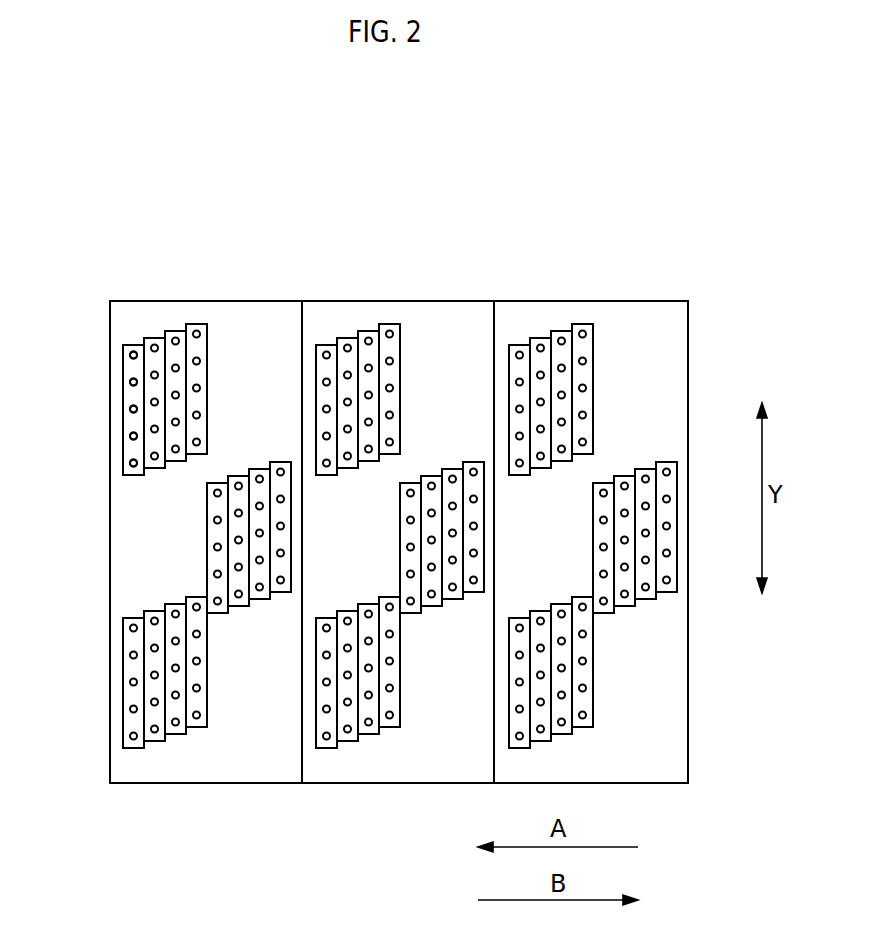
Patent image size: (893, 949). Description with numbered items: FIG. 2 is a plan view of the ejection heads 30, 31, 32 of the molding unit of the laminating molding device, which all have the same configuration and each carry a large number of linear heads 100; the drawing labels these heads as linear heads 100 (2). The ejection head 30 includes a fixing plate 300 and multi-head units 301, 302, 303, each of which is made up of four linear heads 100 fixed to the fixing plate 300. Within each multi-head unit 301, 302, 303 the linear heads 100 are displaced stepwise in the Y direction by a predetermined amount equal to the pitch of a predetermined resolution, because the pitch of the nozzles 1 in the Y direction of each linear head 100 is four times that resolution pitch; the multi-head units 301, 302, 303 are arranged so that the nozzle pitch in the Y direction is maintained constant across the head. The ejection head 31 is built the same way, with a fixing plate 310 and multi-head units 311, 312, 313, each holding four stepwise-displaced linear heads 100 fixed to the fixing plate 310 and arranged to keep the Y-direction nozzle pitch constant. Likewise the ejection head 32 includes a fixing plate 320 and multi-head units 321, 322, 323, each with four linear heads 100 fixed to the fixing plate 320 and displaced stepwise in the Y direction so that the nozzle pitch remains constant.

The nozzle 1 is at (86, 409).
The light-emitting element array chip 2 is at (150, 345).
The linear head 100 is at (191, 324).
The ejection head 30 is at (410, 301).
The ejection head 31 is at (238, 300).
The ejection head 32 is at (604, 300).
The fixing plate 300 is at (442, 775).
The multi-head unit 301 is at (396, 319).
The multi-head unit 302 is at (402, 458).
The multi-head unit 303 is at (400, 752).
The fixing plate 310 is at (226, 775).
The multi-head unit 311 is at (114, 383).
The multi-head unit 312 is at (210, 616).
The multi-head unit 313 is at (207, 752).
The fixing plate 320 is at (668, 758).
The multi-head unit 321 is at (588, 319).
The multi-head unit 322 is at (596, 458).
The multi-head unit 323 is at (507, 752).